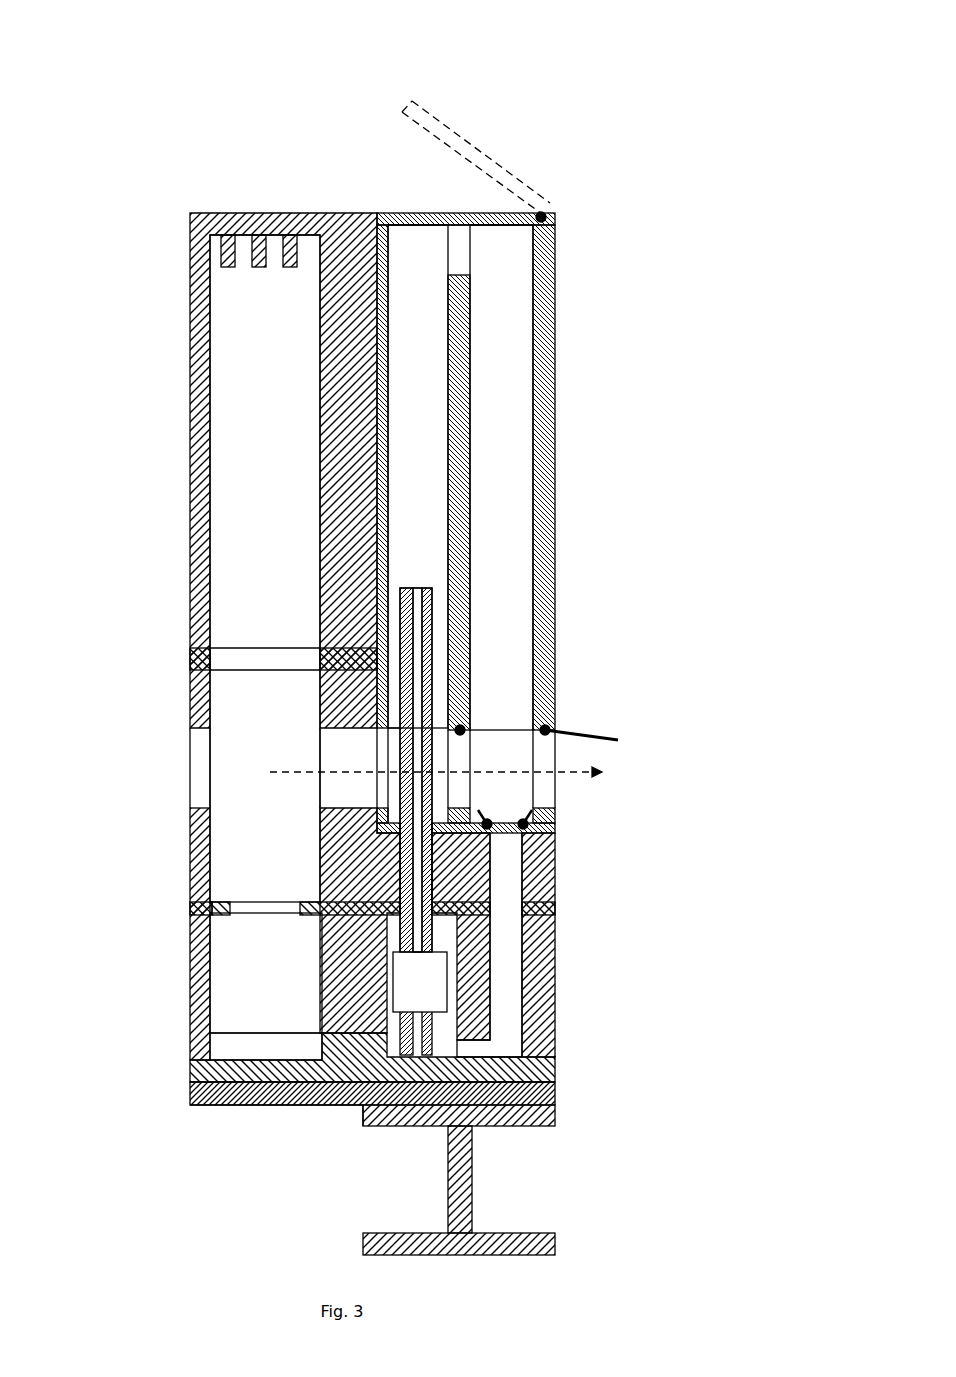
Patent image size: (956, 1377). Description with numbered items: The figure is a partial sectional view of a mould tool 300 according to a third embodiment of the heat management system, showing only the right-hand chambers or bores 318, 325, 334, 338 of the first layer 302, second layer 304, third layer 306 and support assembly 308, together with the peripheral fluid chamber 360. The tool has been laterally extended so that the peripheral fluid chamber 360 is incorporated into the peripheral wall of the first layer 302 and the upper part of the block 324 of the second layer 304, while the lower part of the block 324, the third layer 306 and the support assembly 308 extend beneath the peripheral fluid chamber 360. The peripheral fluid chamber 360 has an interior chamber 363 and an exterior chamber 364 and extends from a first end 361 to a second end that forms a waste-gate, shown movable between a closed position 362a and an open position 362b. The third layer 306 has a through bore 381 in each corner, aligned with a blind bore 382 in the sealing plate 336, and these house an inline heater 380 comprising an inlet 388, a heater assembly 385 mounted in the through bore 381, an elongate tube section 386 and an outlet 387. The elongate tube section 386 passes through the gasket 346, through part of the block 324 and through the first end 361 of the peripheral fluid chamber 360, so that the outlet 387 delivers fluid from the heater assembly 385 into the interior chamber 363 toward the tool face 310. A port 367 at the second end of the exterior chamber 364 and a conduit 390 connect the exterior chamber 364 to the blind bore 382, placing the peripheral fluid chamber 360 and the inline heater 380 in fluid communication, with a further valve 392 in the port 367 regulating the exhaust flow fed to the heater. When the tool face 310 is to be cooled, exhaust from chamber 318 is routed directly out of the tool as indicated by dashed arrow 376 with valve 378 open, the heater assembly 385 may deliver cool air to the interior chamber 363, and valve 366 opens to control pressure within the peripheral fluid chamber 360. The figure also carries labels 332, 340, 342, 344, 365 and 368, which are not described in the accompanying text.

The mould tool 300 is at (255, 176).
The first layer 302 is at (170, 443).
The second layer 304 is at (175, 697).
The third layer 306 is at (120, 955).
The support assembly 308 is at (120, 1100).
The tool face 310 is at (207, 213).
The chamber 318 is at (265, 568).
The block 324 is at (193, 872).
The bore 325 is at (372, 775).
The lower housing wall 332 is at (193, 1008).
The bore 334 is at (266, 973).
The sealing plate 336 is at (193, 1038).
The bore 338 is at (266, 1046).
The base plate 340 is at (558, 1090).
The mounting plate 342 is at (558, 1117).
The upper seal 344 is at (190, 653).
The gasket 346 is at (193, 910).
The peripheral fluid chamber 360 is at (443, 86).
The first end 361 is at (555, 825).
The closed position 362a is at (467, 225).
The open position 362b is at (508, 182).
The interior chamber 363 is at (418, 476).
The exterior chamber 364 is at (501, 477).
The divider wall 365 is at (468, 285).
The valve 366 is at (597, 735).
The port 367 is at (503, 822).
The valve housing wall 368 is at (545, 260).
The dashed arrow 376 is at (278, 772).
The valve 378 is at (438, 728).
The inline heater 380 is at (338, 1123).
The through bore 381 is at (302, 1105).
The blind bore 382 is at (327, 1105).
The heater assembly 385 is at (420, 821).
The elongate tube section 386 is at (433, 630).
The outlet 387 is at (412, 588).
The inlet 388 is at (385, 1108).
The conduit 390 is at (510, 957).
The further valve 392 is at (488, 827).